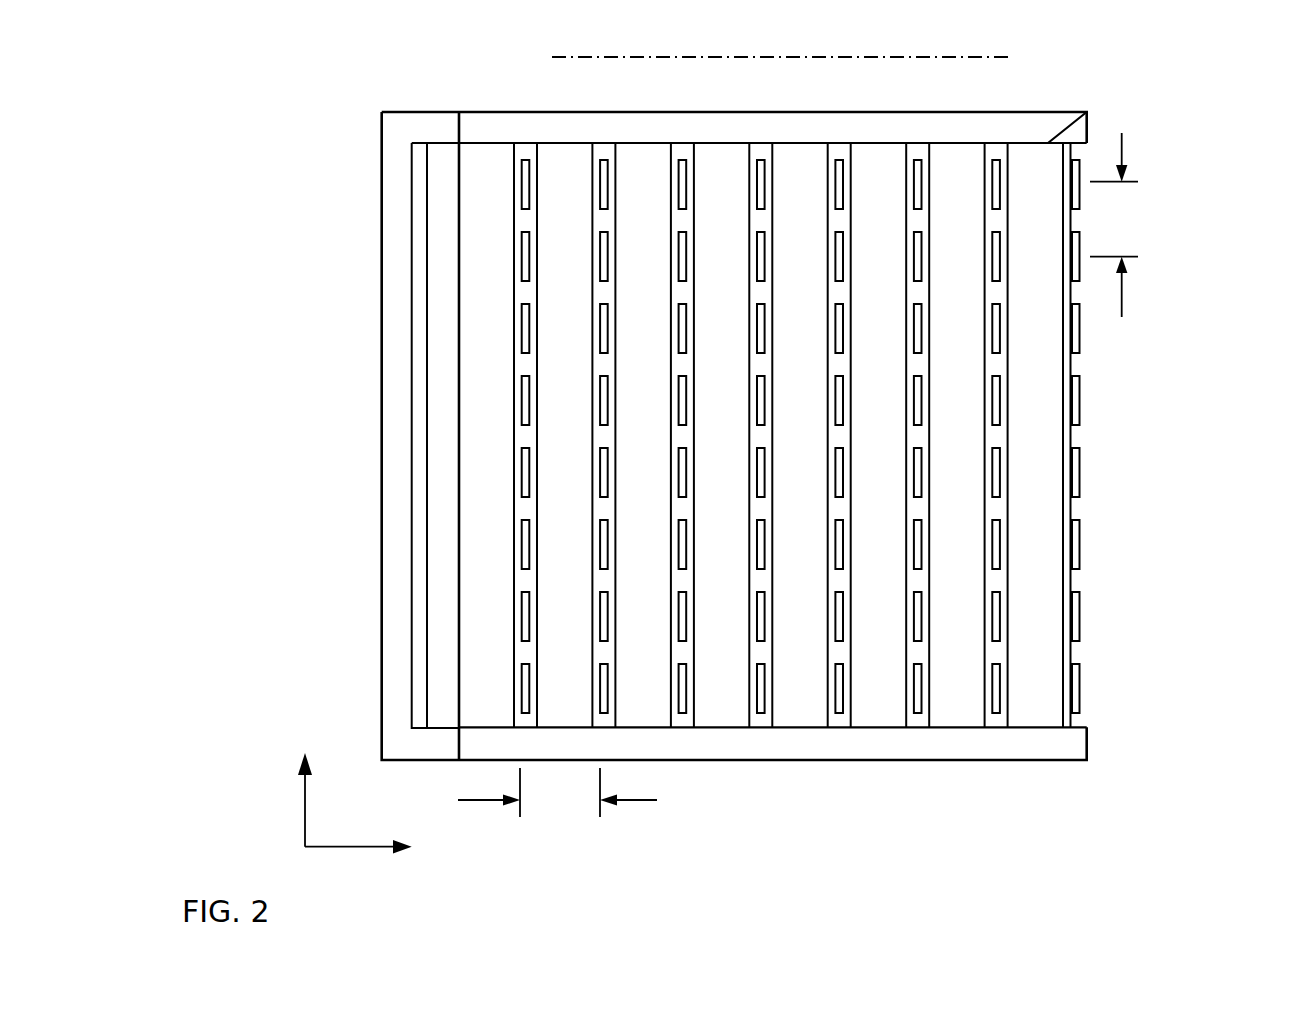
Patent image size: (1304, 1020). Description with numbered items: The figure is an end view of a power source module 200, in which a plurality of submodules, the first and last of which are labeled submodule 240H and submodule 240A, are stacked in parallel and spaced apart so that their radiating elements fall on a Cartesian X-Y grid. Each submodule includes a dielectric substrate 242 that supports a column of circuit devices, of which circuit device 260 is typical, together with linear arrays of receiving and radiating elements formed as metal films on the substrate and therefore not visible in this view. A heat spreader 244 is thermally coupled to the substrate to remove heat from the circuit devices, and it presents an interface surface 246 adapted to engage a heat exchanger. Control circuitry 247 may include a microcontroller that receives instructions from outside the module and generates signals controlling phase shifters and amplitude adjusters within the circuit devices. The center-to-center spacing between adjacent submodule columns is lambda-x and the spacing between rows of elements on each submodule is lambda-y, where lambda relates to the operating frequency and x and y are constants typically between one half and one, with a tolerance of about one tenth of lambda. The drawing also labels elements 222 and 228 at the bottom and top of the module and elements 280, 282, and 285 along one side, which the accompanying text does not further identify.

The power source module 200 is at (333, 83).
The substrate 222 is at (750, 760).
The center line 228 is at (728, 112).
The submodule 240H is at (540, 97).
The submodule 240A is at (1142, 386).
The dielectric substrate 242 is at (1067, 590).
The heat spreader 244 is at (1032, 543).
The interface surface 246 is at (1032, 727).
The control circuitry 247 is at (1087, 112).
The circuit device 260 is at (1078, 402).
The frame 280 is at (380, 272).
The outer layer 282 is at (395, 352).
The inner layer 285 is at (418, 435).